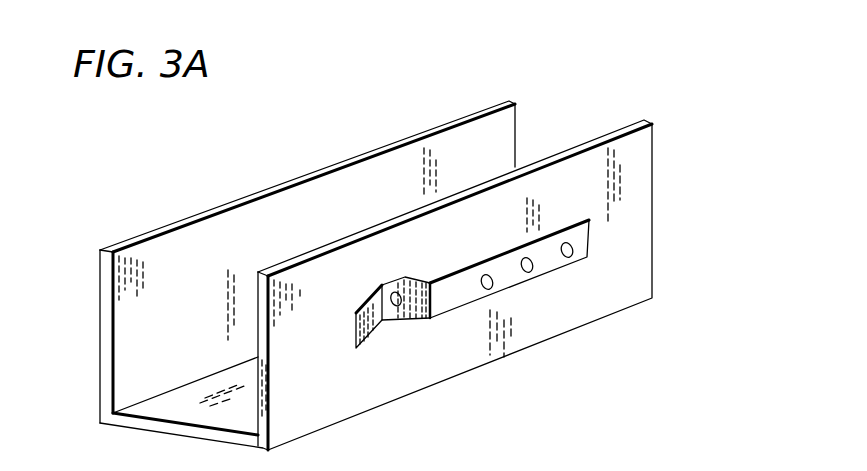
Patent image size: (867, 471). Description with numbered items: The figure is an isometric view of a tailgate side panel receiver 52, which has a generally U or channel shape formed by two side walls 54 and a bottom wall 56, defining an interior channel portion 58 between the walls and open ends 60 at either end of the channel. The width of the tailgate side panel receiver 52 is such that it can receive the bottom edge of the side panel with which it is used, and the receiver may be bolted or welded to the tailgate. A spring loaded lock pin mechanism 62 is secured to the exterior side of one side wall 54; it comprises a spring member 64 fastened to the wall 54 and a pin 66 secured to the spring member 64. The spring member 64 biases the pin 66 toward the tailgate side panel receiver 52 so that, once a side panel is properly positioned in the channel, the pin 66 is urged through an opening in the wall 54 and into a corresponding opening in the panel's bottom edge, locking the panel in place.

The tailgate side panel receiver 52 is at (373, 248).
The side walls 54 is at (180, 218).
The bottom wall 56 is at (207, 412).
The interior channel portion 58 is at (350, 183).
The open ends 60 is at (153, 318).
The spring loaded lock pin mechanism 62 is at (484, 329).
The spring member 64 is at (507, 275).
The pin 66 is at (406, 286).